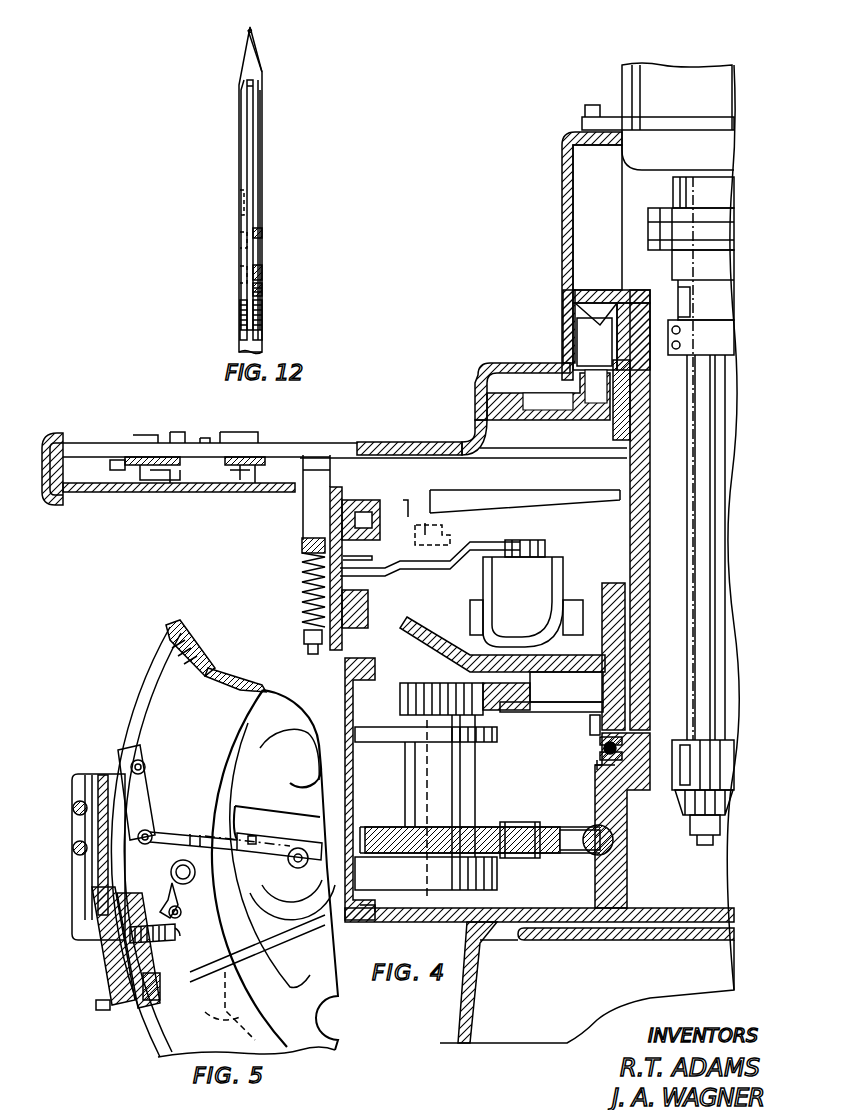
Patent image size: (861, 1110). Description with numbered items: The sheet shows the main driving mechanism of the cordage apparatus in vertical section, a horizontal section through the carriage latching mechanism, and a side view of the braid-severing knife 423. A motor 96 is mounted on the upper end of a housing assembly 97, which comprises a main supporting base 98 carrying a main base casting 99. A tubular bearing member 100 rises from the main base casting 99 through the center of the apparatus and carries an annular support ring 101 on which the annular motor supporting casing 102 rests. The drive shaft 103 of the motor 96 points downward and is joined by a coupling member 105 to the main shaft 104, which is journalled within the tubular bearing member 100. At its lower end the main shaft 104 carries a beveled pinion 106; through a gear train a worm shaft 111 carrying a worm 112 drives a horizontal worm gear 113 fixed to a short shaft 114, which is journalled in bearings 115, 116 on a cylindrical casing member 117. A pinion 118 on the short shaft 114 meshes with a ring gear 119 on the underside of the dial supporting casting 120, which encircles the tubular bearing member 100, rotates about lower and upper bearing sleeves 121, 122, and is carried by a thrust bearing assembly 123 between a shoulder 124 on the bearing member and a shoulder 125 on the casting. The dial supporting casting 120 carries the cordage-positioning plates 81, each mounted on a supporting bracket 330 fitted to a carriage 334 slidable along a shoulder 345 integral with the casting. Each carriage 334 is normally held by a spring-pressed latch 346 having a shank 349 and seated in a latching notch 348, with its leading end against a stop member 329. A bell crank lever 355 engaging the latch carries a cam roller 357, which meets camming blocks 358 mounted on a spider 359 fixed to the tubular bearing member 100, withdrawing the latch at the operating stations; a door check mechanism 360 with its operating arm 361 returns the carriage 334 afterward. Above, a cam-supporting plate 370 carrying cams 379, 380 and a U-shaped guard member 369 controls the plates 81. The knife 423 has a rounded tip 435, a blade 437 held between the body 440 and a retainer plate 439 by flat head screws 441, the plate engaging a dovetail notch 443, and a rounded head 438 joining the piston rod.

In FIG. 12, the knife 423 is at (275, 94).
In FIG. 12, the rounded tip 435 is at (253, 29).
In FIG. 12, the dovetail notch 443 is at (239, 94).
In FIG. 12, the blade 437 is at (247, 153).
In FIG. 12, the body of the knife 440 is at (265, 174).
In FIG. 12, the flat head screws 441 is at (238, 267).
In FIG. 12, the rounded head 438 is at (263, 296).
In FIG. 12, the retainer plate 439 is at (241, 314).
In FIG. 4, the motor 96 is at (622, 81).
In FIG. 4, the housing assembly 97 is at (560, 176).
In FIG. 4, the annular motor supporting casing 102 is at (575, 202).
In FIG. 4, the drive shaft 103 is at (675, 188).
In FIG. 4, the coupling member 105 is at (647, 233).
In FIG. 4, the annular support ring 101 is at (640, 290).
In FIG. 4, the main shaft 104 is at (687, 483).
In FIG. 4, the upper bearing sleeve 122 is at (630, 398).
In FIG. 4, the tubular bearing member 100 is at (645, 558).
In FIG. 4, the lower bearing sleeve 121 is at (620, 596).
In FIG. 4, the dial supporting casting 120 is at (476, 430).
In FIG. 5, the dial supporting casting 120 is at (200, 665).
In FIG. 4, the cordage-positioning plates 81 is at (120, 440).
In FIG. 4, the guard member 369 is at (56, 500).
In FIG. 4, the cam-supporting plate 370 is at (162, 484).
In FIG. 4, the cam 380 is at (140, 468).
In FIG. 4, the cam 379 is at (252, 470).
In FIG. 4, the supporting bracket 330 is at (332, 456).
In FIG. 5, the supporting bracket 330 is at (93, 813).
In FIG. 4, the carriage 334 is at (330, 580).
In FIG. 5, the carriage 334 is at (110, 760).
In FIG. 4, the operating arm 361 is at (410, 572).
In FIG. 5, the operating arm 361 is at (198, 818).
In FIG. 4, the camming blocks 358 is at (430, 530).
In FIG. 5, the camming blocks 358 is at (219, 1006).
In FIG. 4, the spider 359 is at (588, 498).
In FIG. 5, the spider 359 is at (235, 737).
In FIG. 4, the door check mechanism 360 is at (483, 588).
In FIG. 5, the door check mechanism 360 is at (278, 892).
In FIG. 4, the cylindrical casing member 117 is at (360, 782).
In FIG. 4, the pinion 118 is at (440, 682).
In FIG. 4, the ring gear 119 is at (500, 712).
In FIG. 4, the bearing 115 is at (497, 738).
In FIG. 4, the short shaft 114 is at (470, 762).
In FIG. 4, the bearing 116 is at (497, 866).
In FIG. 4, the worm 112 is at (540, 828).
In FIG. 4, the worm gear 113 is at (503, 828).
In FIG. 4, the worm shaft 111 is at (590, 842).
In FIG. 4, the main base casting 99 is at (628, 878).
In FIG. 4, the shoulder 125 is at (592, 728).
In FIG. 4, the thrust bearing assembly 123 is at (600, 746).
In FIG. 4, the shoulder 124 is at (595, 772).
In FIG. 4, the beveled pinion 106 is at (679, 804).
In FIG. 4, the main supporting base 98 is at (465, 950).
In FIG. 5, the shoulder 345 is at (152, 675).
In FIG. 5, the stop member 329 is at (168, 629).
In FIG. 5, the cam roller 357 is at (175, 868).
In FIG. 5, the bell crank lever 355 is at (168, 894).
In FIG. 5, the latching notch 348 is at (98, 945).
In FIG. 5, the spring-pressed latch 346 is at (100, 957).
In FIG. 5, the shank 349 is at (178, 940).